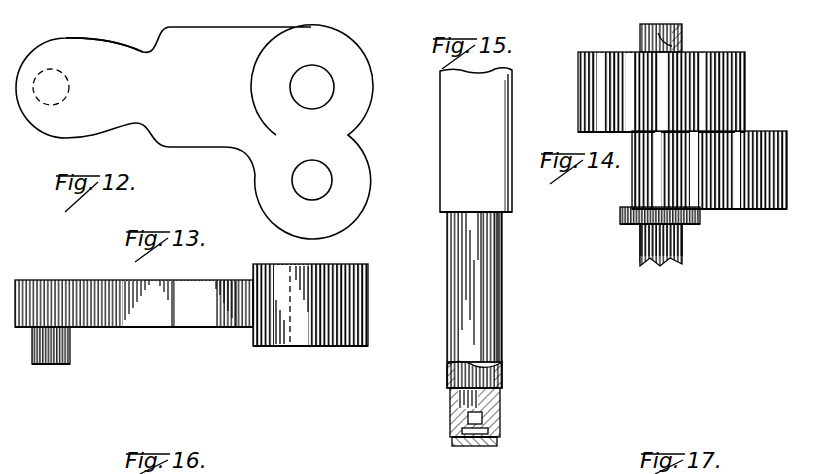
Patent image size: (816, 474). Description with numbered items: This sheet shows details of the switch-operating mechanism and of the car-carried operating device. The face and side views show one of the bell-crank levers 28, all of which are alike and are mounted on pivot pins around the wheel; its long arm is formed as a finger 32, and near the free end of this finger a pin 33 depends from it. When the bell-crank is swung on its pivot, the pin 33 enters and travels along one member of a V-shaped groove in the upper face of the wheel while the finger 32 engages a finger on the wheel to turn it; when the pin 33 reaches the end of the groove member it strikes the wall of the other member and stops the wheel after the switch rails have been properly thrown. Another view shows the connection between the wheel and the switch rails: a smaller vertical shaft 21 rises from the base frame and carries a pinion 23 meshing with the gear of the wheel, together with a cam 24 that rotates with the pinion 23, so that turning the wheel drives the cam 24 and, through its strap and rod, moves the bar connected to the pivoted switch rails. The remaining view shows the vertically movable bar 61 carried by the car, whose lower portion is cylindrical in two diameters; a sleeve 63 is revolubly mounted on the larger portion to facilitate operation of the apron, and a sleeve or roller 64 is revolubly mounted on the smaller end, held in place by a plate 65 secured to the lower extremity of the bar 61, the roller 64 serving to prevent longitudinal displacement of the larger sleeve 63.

In FIG. 14, the vertical shaft 21 is at (645, 244).
In FIG. 14, the pinion 23 is at (746, 82).
In FIG. 14, the cam 24 is at (747, 208).
In FIG. 12, the bell-crank lever 28 is at (194, 132).
In FIG. 13, the bell-crank lever 28 is at (191, 305).
In FIG. 12, the finger 32 is at (102, 33).
In FIG. 12, the pin 33 is at (70, 87).
In FIG. 13, the pin 33 is at (67, 345).
In FIG. 15, the vertically movable bar 61 is at (476, 140).
In FIG. 15, the sleeve 63 is at (503, 369).
In FIG. 15, the sleeve or roller 64 is at (501, 420).
In FIG. 15, the plate 65 is at (474, 447).